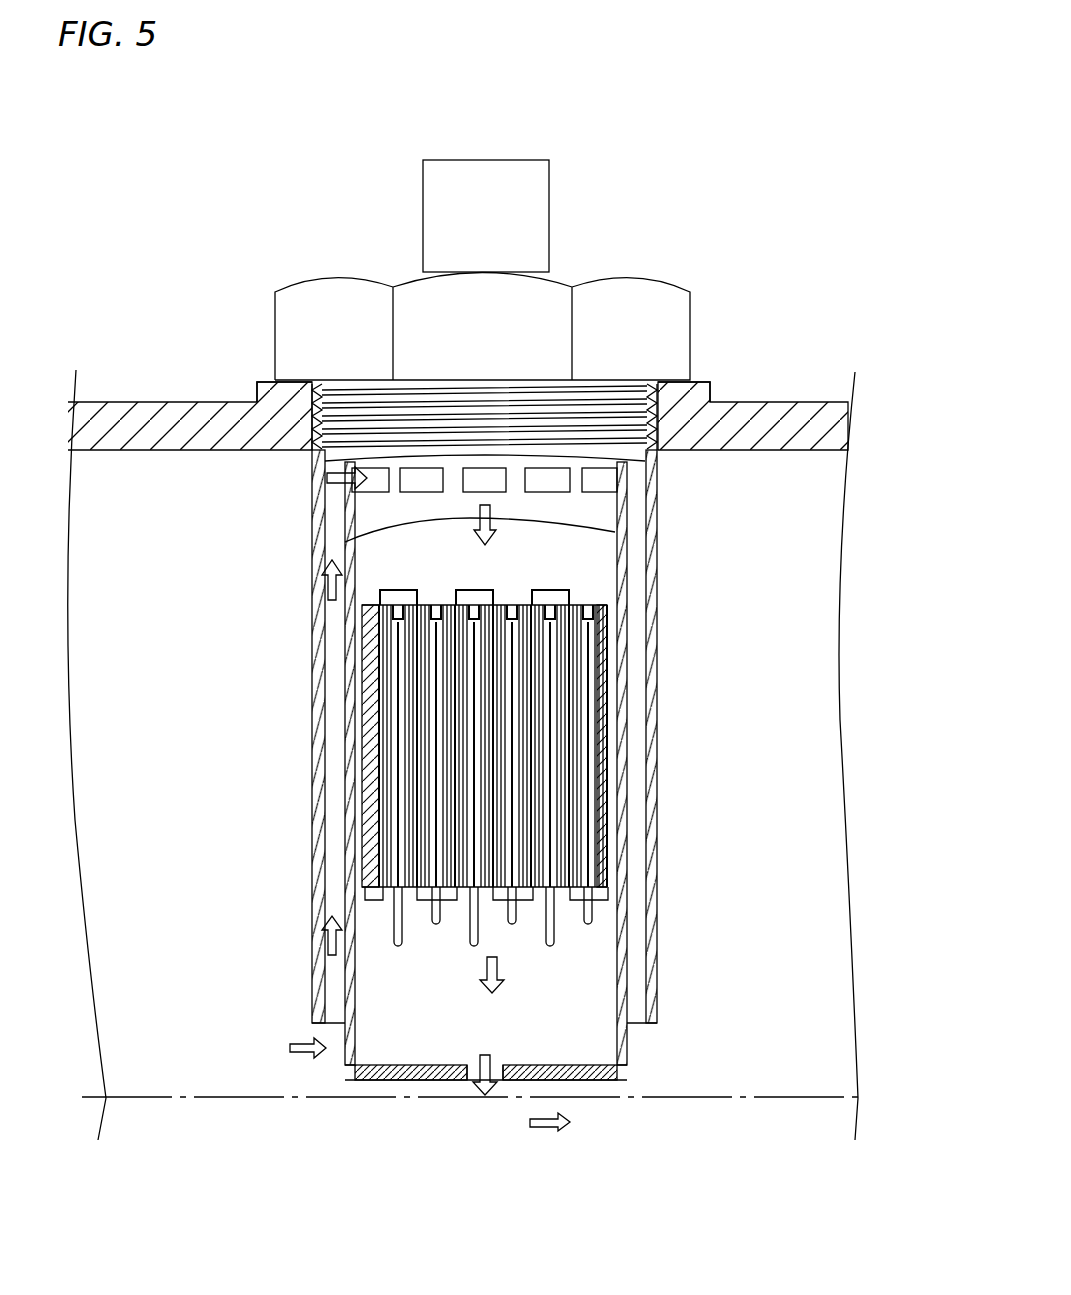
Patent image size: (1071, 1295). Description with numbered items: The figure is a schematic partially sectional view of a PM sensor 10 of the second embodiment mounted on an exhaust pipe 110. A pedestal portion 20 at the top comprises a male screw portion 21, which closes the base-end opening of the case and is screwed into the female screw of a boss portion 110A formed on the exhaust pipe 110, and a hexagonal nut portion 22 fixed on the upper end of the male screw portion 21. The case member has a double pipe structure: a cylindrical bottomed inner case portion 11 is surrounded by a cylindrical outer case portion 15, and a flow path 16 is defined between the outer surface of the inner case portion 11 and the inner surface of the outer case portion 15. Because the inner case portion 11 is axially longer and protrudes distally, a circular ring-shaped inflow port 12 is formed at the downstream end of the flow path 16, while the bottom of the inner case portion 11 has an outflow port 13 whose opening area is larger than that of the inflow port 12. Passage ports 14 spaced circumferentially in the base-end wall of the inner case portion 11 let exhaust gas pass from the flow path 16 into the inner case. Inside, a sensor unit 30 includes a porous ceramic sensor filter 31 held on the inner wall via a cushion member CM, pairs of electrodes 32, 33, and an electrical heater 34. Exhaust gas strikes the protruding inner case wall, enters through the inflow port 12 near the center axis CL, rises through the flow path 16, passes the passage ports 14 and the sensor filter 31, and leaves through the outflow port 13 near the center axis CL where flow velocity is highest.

The PM sensor 10 is at (350, 198).
The exhaust pipe 110 is at (458, 376).
The boss portion 110A is at (270, 398).
The pedestal portion 20 is at (598, 327).
The male screw portion 21 is at (700, 268).
The nut portion 22 is at (673, 345).
The passage ports 14 is at (607, 478).
The electrical heater 34 is at (575, 597).
The cushion member CM is at (636, 768).
The sensor unit 30 is at (645, 738).
The sensor filter 31 is at (607, 730).
The electrodes 32 is at (607, 780).
The electrodes 33 is at (607, 838).
The flow path 16 is at (328, 713).
The outer case portion 15 is at (318, 950).
The inner case portion 11 is at (348, 905).
The inflow port 12 is at (333, 1060).
The outflow port 13 is at (470, 1083).
The center axis CL is at (456, 1098).